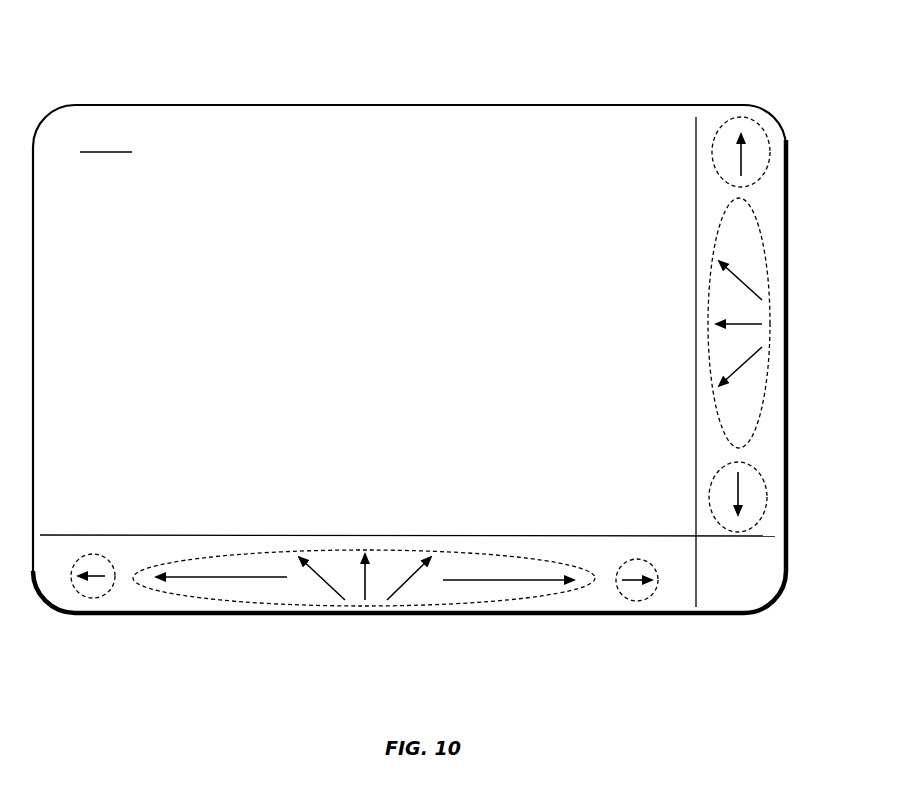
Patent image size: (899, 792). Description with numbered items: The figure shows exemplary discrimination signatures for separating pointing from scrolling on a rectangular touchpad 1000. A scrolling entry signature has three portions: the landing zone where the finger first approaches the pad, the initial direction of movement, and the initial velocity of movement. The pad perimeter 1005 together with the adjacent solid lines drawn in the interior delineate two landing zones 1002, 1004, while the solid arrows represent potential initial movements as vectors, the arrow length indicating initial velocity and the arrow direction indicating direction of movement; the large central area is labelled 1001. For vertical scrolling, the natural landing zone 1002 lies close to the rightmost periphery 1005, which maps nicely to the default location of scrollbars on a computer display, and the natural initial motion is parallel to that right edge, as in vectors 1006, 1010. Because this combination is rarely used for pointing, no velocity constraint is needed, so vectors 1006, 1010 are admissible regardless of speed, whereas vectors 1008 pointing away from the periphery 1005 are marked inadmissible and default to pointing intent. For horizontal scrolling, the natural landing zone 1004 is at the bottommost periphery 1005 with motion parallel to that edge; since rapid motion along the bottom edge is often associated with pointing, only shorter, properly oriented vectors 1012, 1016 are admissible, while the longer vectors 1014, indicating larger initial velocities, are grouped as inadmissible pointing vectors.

The rectangular touchpad 1000 is at (573, 46).
The display screen 1001 is at (106, 142).
The landing zone 1002 is at (763, 447).
The landing zone 1004 is at (578, 606).
The pad perimeter 1005 is at (34, 185).
The vector 1006 is at (757, 141).
The vectors 1008 is at (757, 233).
The vector 1010 is at (755, 500).
The vector 1012 is at (93, 597).
The vectors 1014 is at (285, 592).
The vector 1016 is at (637, 596).